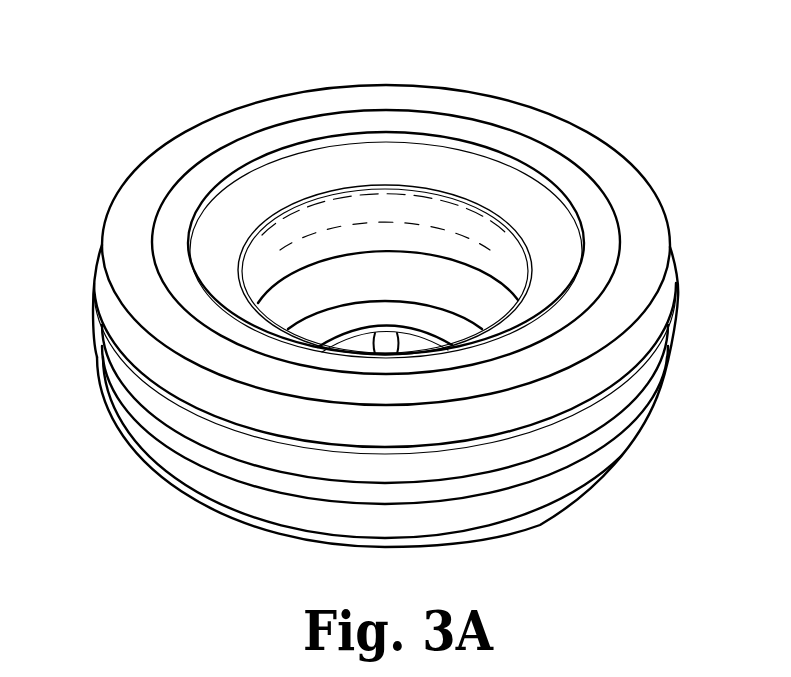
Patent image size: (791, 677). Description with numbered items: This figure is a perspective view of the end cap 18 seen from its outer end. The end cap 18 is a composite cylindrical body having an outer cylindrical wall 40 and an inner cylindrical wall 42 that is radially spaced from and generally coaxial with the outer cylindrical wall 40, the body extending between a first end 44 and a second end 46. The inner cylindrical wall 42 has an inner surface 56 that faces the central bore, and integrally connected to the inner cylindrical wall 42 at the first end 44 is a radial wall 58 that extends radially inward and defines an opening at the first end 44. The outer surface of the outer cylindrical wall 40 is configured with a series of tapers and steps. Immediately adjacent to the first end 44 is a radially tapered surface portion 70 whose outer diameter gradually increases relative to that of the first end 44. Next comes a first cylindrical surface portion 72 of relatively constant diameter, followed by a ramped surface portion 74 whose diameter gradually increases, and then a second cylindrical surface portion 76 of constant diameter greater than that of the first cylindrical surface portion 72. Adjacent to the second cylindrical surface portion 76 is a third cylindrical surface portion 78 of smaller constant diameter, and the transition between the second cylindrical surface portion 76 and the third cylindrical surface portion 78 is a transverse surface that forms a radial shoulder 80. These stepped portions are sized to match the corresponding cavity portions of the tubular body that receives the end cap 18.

The end cap 18 is at (318, 87).
The outer cylindrical wall 40 is at (666, 320).
The inner cylindrical wall 42 is at (450, 273).
The first end 44 is at (560, 517).
The second end 46 is at (627, 194).
The inner surface 56 is at (304, 290).
The radial wall 58 is at (388, 317).
The radially tapered surface portion 70 is at (600, 485).
The first cylindrical surface portion 72 is at (622, 447).
The ramped surface portion 74 is at (626, 422).
The second cylindrical surface portion 76 is at (643, 385).
The third cylindrical surface portion 78 is at (624, 351).
The radial shoulder 80 is at (688, 270).